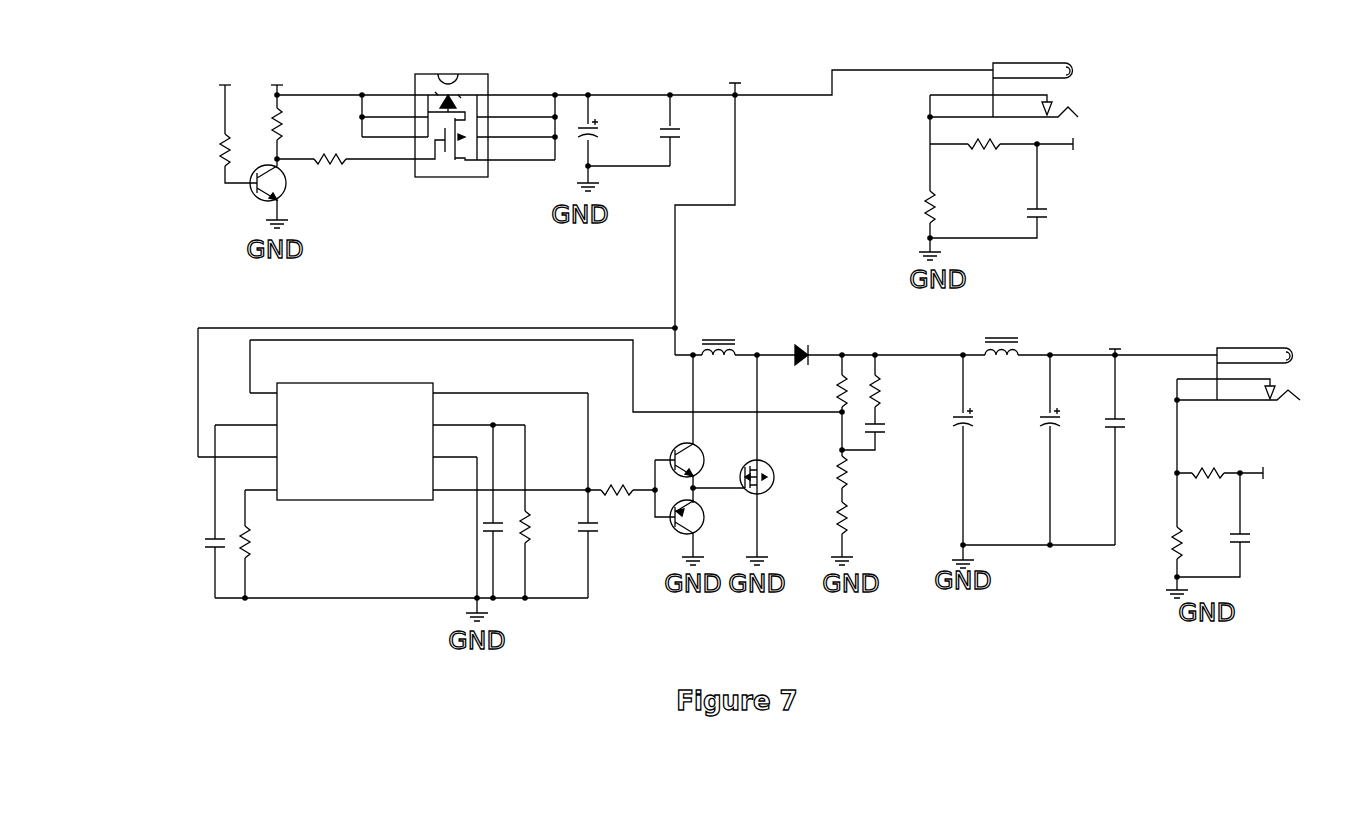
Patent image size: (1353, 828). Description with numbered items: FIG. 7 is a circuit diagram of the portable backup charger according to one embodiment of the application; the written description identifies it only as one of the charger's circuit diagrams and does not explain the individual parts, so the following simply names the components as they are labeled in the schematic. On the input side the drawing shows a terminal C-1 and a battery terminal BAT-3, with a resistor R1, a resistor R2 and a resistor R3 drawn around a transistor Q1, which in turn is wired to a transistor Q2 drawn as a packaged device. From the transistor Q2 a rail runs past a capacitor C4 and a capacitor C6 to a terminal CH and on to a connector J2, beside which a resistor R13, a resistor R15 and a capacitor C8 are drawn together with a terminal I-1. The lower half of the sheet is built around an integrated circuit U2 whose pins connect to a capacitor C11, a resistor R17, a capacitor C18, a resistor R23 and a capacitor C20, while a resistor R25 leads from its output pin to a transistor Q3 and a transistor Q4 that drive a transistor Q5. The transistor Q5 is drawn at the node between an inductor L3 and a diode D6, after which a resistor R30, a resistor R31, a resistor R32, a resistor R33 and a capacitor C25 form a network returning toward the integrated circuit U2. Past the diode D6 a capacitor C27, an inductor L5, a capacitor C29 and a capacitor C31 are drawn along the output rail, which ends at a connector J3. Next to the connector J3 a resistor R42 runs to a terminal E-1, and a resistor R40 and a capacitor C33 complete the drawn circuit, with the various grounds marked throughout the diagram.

The C-1 terminal C-1 is at (228, 69).
The resistor R1 is at (221, 134).
The battery terminal BAT-3 is at (300, 66).
The resistor R2 is at (259, 123).
The resistor R3 is at (361, 144).
The transistor Q1 is at (290, 193).
The MOSFET Q2 is at (486, 108).
The capacitor C4 is at (608, 141).
The capacitor C6 is at (691, 129).
The charge terminal CH is at (743, 72).
The connector J2 is at (1004, 75).
The resistor R13 is at (906, 187).
The resistor R15 is at (1001, 158).
The terminal I-1 is at (1098, 142).
The capacitor C8 is at (988, 191).
The controller IC U2 (GS3660) U2 is at (393, 440).
The capacitor C11 is at (190, 511).
The resistor R17 is at (270, 545).
The capacitor C18 is at (464, 511).
The resistor R23 is at (550, 513).
The capacitor C20 is at (613, 495).
The resistor R25 is at (623, 476).
The transistor Q3 is at (713, 427).
The transistor Q4 is at (713, 525).
The MOSFET Q5 is at (751, 458).
The inductor L3 is at (718, 331).
The diode D6 is at (814, 336).
The resistor R30 is at (817, 383).
The resistor R31 is at (868, 457).
The resistor R32 is at (865, 533).
The resistor R33 is at (903, 388).
The capacitor C25 is at (889, 433).
The capacitor C27 is at (987, 460).
The inductor L5 is at (1001, 332).
The capacitor C29 is at (1076, 450).
The capacitor C31 is at (1140, 448).
The connector J3 is at (1238, 358).
The resistor R42 is at (1218, 437).
The terminal E-1 is at (1285, 474).
The resistor R40 is at (1155, 535).
The capacitor C33 is at (1242, 525).